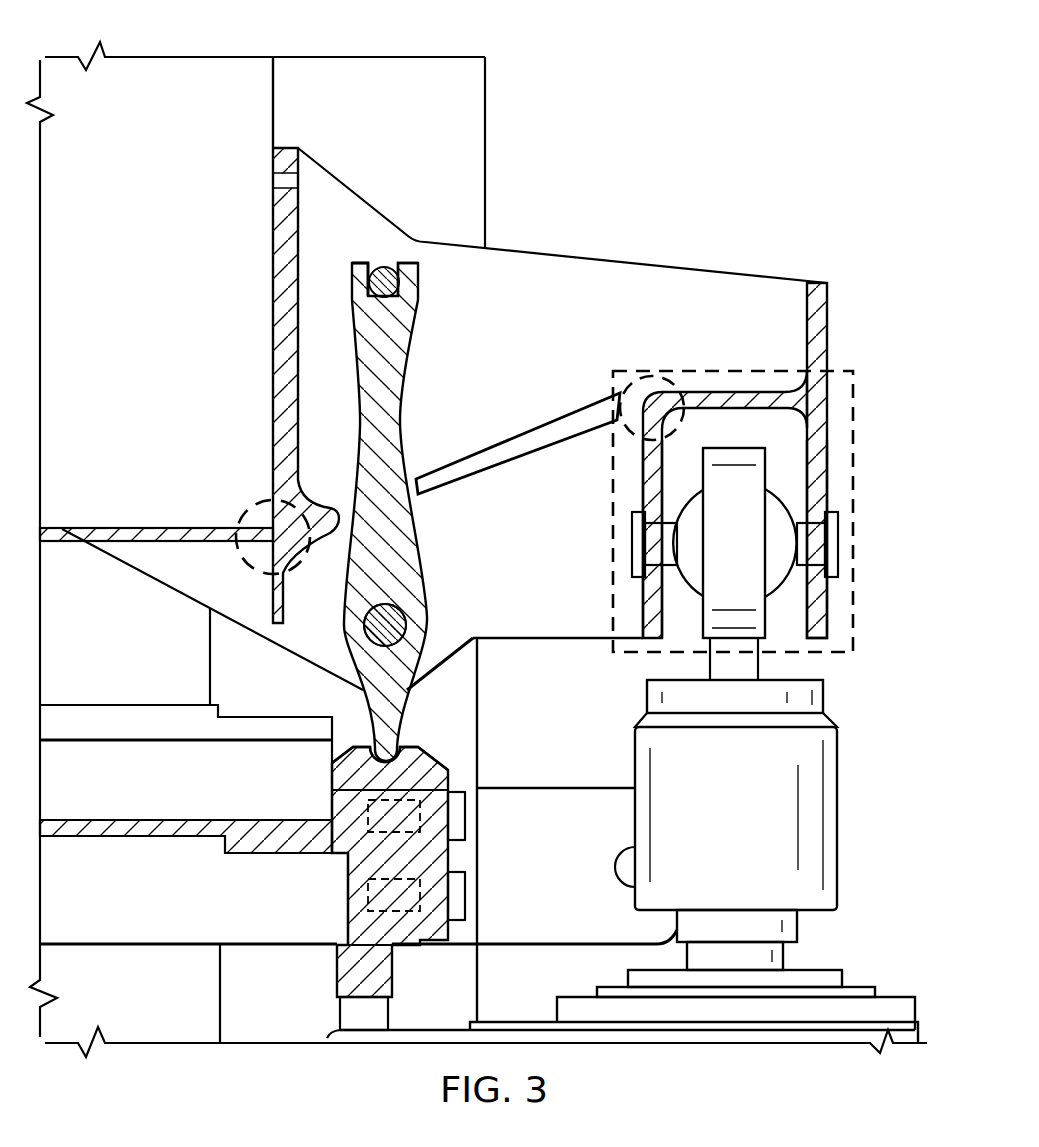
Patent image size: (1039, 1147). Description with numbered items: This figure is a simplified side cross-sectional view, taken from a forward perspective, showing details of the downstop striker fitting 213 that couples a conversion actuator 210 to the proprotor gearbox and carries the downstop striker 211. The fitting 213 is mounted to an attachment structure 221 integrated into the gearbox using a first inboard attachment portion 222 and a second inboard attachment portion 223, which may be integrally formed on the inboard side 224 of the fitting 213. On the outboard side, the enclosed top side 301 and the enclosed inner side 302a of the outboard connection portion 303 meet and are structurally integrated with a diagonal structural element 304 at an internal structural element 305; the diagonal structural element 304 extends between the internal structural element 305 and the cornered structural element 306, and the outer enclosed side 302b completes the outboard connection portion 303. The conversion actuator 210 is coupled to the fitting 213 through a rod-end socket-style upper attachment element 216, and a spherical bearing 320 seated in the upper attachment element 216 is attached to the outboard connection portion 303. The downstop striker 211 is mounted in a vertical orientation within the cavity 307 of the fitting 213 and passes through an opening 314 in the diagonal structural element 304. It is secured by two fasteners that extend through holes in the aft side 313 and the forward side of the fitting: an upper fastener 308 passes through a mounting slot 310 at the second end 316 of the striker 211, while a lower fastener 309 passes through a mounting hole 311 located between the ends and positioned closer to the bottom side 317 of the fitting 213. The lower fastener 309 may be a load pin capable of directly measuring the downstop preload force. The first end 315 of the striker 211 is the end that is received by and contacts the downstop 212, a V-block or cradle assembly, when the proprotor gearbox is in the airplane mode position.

The conversion actuator 210 is at (862, 937).
The downstop striker 211 is at (355, 667).
The downstop 212 is at (453, 850).
The downstop striker fitting 213 is at (831, 430).
The upper attachment element 216 is at (825, 697).
The attachment structure 221 is at (200, 66).
The first inboard attachment portion 222 is at (282, 253).
The second inboard attachment portion 223 is at (147, 529).
The inboard side 224 is at (140, 232).
The enclosed top side 301 is at (715, 398).
The enclosed inner side 302a is at (652, 467).
The outer enclosed side 302b is at (818, 596).
The outboard connection portion 303 is at (856, 456).
The diagonal structural element 304 is at (563, 410).
The internal structural element 305 is at (662, 378).
The cornered structural element 306 is at (250, 505).
The cavity 307 is at (617, 283).
The upper fastener 308 is at (399, 294).
The lower fastener 309 is at (364, 630).
The mounting slot 310 is at (398, 263).
The mounting hole 311 is at (392, 605).
The aft side 313 is at (748, 297).
The opening 314 is at (353, 494).
The first end 315 is at (430, 757).
The second end 316 is at (362, 263).
The bottom side 317 is at (585, 650).
The spherical bearing 320 is at (778, 505).